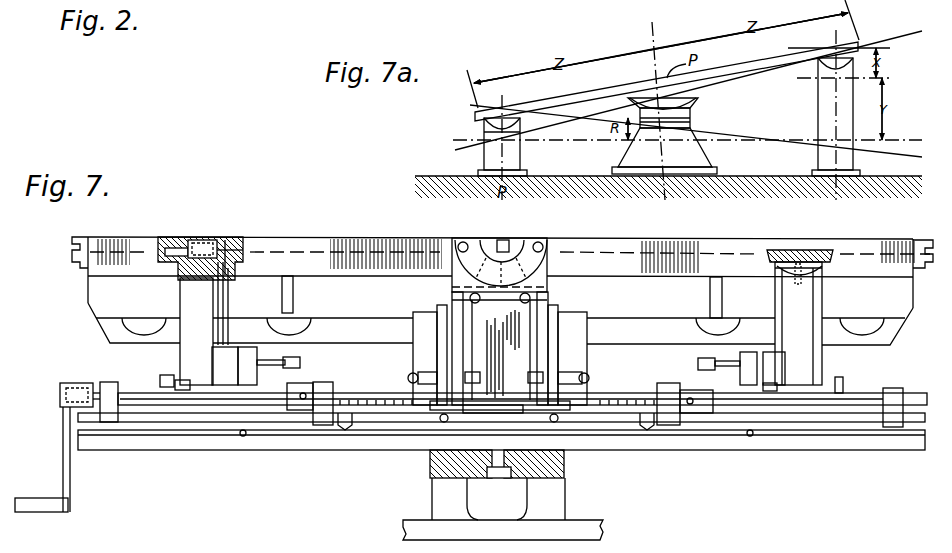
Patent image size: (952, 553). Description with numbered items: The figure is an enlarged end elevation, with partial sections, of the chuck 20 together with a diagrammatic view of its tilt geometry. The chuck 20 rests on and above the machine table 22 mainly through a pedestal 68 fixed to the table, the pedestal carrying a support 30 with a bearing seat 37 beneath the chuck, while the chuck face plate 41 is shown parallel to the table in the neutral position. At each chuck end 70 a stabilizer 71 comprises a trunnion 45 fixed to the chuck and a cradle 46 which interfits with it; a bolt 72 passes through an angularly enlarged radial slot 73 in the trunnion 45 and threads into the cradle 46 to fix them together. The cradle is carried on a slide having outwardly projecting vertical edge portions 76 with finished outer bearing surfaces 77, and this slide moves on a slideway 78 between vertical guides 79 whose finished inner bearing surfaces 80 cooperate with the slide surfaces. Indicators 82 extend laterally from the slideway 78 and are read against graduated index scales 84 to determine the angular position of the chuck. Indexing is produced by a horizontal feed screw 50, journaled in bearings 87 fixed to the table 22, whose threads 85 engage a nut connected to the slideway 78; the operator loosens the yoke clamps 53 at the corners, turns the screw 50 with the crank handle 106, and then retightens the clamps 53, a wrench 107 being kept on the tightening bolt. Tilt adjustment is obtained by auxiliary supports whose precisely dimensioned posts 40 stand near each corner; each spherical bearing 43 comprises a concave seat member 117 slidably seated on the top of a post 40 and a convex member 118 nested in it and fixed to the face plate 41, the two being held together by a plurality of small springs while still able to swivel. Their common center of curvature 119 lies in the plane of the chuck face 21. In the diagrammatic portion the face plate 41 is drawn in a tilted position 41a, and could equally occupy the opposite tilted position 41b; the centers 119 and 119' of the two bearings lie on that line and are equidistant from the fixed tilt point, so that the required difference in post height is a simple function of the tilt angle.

In FIG. 7, the chuck 20 is at (935, 238).
In FIG. 7A, the chuck face 21 is at (586, 94).
In FIG. 7, the chuck face 21 is at (322, 240).
In FIG. 7A, the machine table 22 is at (415, 178).
In FIG. 7, the machine table 22 is at (893, 445).
In FIG. 7A, the pedestal support 30 is at (700, 106).
In FIG. 7A, the roller seat 37 is at (693, 80).
In FIG. 7A, the support post 40 is at (521, 146).
In FIG. 7, the support post 40 is at (180, 353).
In FIG. 7A, the chuck face plate 41 is at (718, 72).
In FIG. 7, the chuck face plate 41 is at (280, 245).
In FIG. 7A, the tilted position 41a is at (892, 34).
In FIG. 7A, the opposite tilted position 41b is at (900, 158).
In FIG. 7A, the bearing 43 is at (812, 68).
In FIG. 7, the bearing 43 is at (175, 273).
In FIG. 7, the trunnion 45 is at (473, 246).
In FIG. 7, the cradle 46 is at (548, 262).
In FIG. 7, the feed screw 50 is at (138, 398).
In FIG. 7, the clamp 53 is at (248, 352).
In FIG. 7A, the pedestal 68 is at (628, 160).
In FIG. 7, the chuck end 70 is at (674, 246).
In FIG. 7, the stabilizer 71 is at (455, 262).
In FIG. 7, the bolt 72 is at (508, 252).
In FIG. 7, the radial slot 73 is at (522, 252).
In FIG. 7, the vertical edge portions 76 is at (548, 294).
In FIG. 7, the outer bearing surfaces 77 is at (545, 347).
In FIG. 7, the slideway 78 is at (426, 336).
In FIG. 7, the vertical guides 79 is at (454, 302).
In FIG. 7, the inner bearing surfaces 80 is at (438, 326).
In FIG. 7, the indicator 82 is at (344, 428).
In FIG. 7, the graduated index scale 84 is at (262, 435).
In FIG. 7, the threads 85 is at (372, 396).
In FIG. 7, the bearing 87 is at (107, 382).
In FIG. 7, the crank handle 106 is at (64, 498).
In FIG. 7, the wrench 107 is at (290, 360).
In FIG. 7A, the concave seat member 117 is at (488, 137).
In FIG. 7, the concave seat member 117 is at (240, 250).
In FIG. 7A, the convex member 118 is at (488, 128).
In FIG. 7, the convex member 118 is at (227, 255).
In FIG. 7A, the center of curvature 119 is at (835, 47).
In FIG. 7A, the center of curvature 119' is at (497, 109).